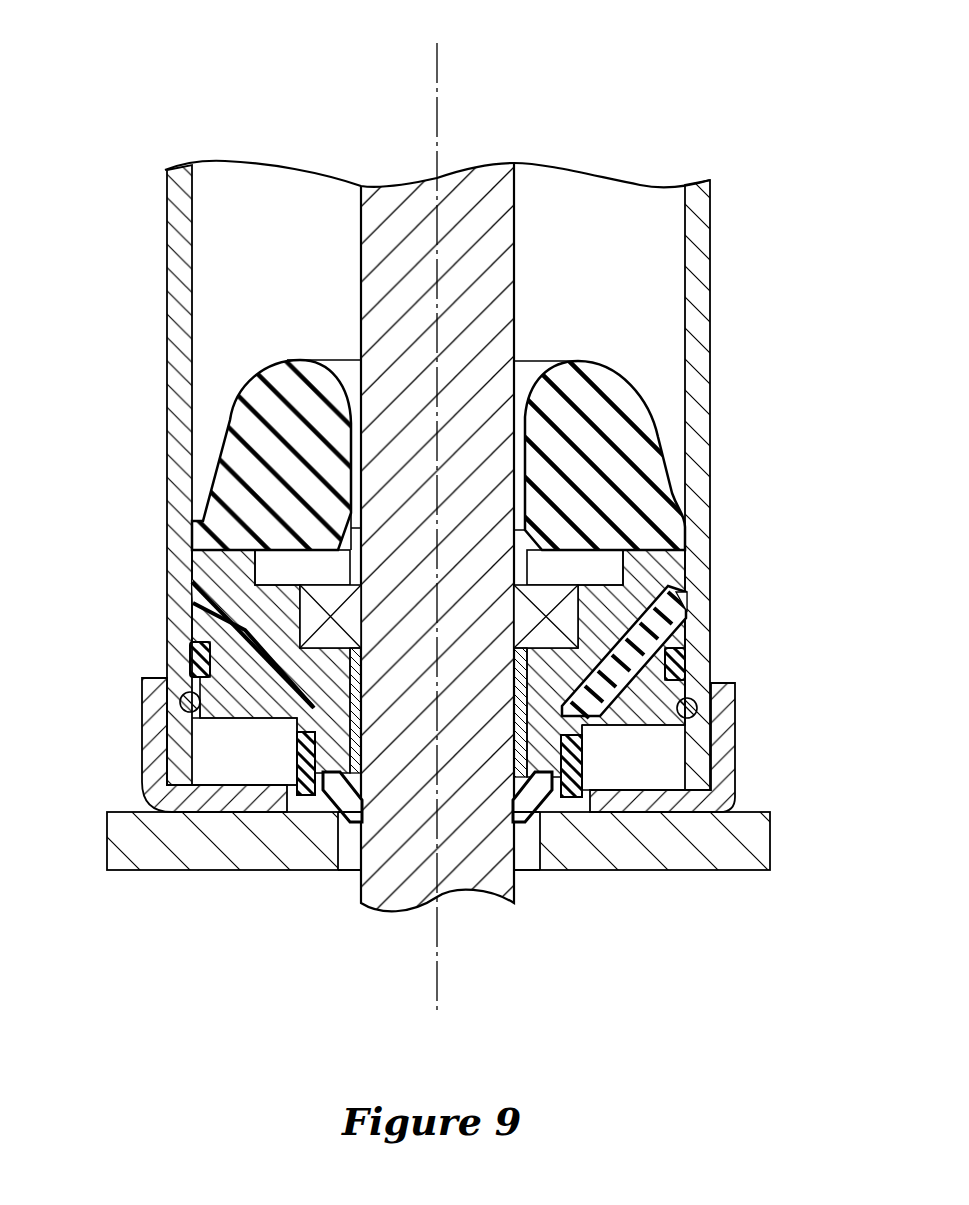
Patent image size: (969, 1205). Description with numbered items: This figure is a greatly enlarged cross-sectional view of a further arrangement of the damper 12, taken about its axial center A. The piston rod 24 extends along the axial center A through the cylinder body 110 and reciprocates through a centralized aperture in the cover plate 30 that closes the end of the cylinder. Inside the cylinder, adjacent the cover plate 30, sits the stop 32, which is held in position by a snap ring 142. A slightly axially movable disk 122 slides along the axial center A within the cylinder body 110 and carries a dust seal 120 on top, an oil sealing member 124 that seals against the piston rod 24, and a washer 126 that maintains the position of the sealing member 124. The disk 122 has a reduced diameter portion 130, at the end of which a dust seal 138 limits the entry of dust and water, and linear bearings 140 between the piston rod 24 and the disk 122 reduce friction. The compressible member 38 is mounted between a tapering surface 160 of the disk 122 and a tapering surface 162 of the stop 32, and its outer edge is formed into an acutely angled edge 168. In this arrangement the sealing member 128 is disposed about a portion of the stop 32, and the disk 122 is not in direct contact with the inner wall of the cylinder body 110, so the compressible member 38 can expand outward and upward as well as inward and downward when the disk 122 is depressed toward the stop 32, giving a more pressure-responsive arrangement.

The damper 12 is at (710, 217).
The piston rod 24 is at (515, 223).
The cover plate 30 is at (140, 705).
The stop 32 is at (190, 745).
The compressible member 38 is at (228, 637).
The cylinder body 110 is at (705, 288).
The dust seal 120 is at (637, 387).
The disk 122 is at (224, 577).
The oil sealing member 124 is at (330, 590).
The washer 126 is at (582, 567).
The sealing member 128 is at (682, 665).
The reduced diameter portion 130 is at (543, 758).
The dust seal 138 is at (325, 790).
The linear bearings 140 is at (506, 752).
The snap ring 142 is at (698, 713).
The tapering surface 160 is at (652, 607).
The tapering surface 162 is at (248, 672).
The acutely angled edge 168 is at (684, 612).
The axial center A is at (437, 73).